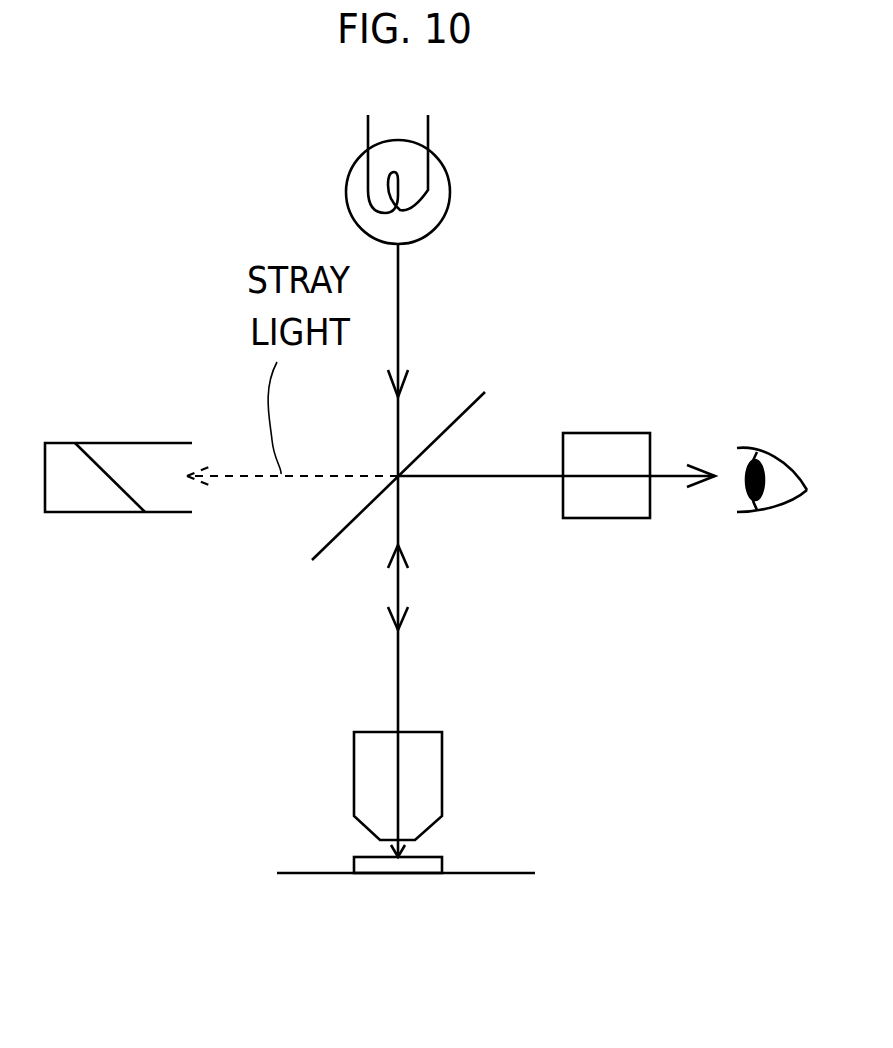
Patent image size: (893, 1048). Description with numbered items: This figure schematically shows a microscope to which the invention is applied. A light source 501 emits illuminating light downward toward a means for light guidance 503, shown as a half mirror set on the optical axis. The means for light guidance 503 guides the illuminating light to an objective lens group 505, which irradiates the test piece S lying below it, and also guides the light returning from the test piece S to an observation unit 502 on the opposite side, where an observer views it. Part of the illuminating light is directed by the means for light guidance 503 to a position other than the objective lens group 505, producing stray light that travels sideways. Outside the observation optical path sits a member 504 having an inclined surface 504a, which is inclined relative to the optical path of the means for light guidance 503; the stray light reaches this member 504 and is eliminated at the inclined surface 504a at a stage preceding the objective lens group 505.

The light source 501 is at (450, 185).
The observation unit 502 is at (623, 433).
The means for light guidance 503 is at (476, 398).
The member having an inclined surface 504 is at (102, 512).
The inclined surface 504a is at (113, 473).
The objective lens group 505 is at (442, 770).
The test piece S is at (442, 865).